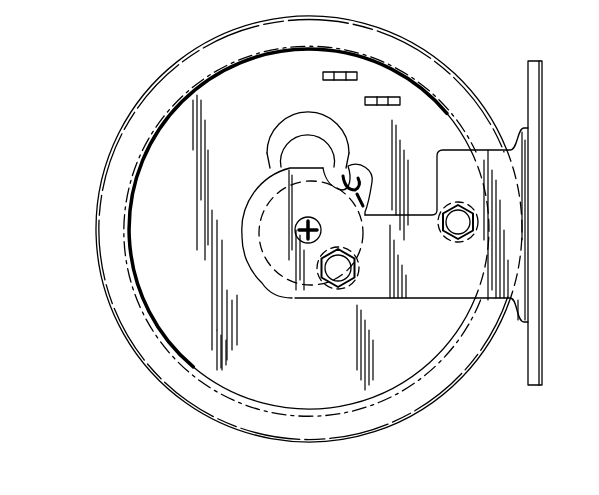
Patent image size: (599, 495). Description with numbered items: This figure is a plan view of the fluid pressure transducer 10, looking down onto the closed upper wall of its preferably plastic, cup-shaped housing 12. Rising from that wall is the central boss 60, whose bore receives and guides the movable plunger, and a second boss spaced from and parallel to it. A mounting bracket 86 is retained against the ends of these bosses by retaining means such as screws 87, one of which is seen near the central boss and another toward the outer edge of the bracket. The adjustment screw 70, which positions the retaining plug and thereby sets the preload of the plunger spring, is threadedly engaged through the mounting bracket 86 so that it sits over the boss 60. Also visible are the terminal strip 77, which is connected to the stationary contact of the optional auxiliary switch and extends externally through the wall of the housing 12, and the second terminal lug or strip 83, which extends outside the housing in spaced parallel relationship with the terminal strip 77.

The transducer 10 is at (114, 142).
The housing 12 is at (398, 408).
The boss 60 is at (270, 170).
The adjustment screw 70 is at (318, 218).
The terminal strip 77 is at (323, 75).
The second terminal lug or strip 83 is at (383, 105).
The mounting bracket 86 is at (388, 300).
The screws 87 is at (357, 268).